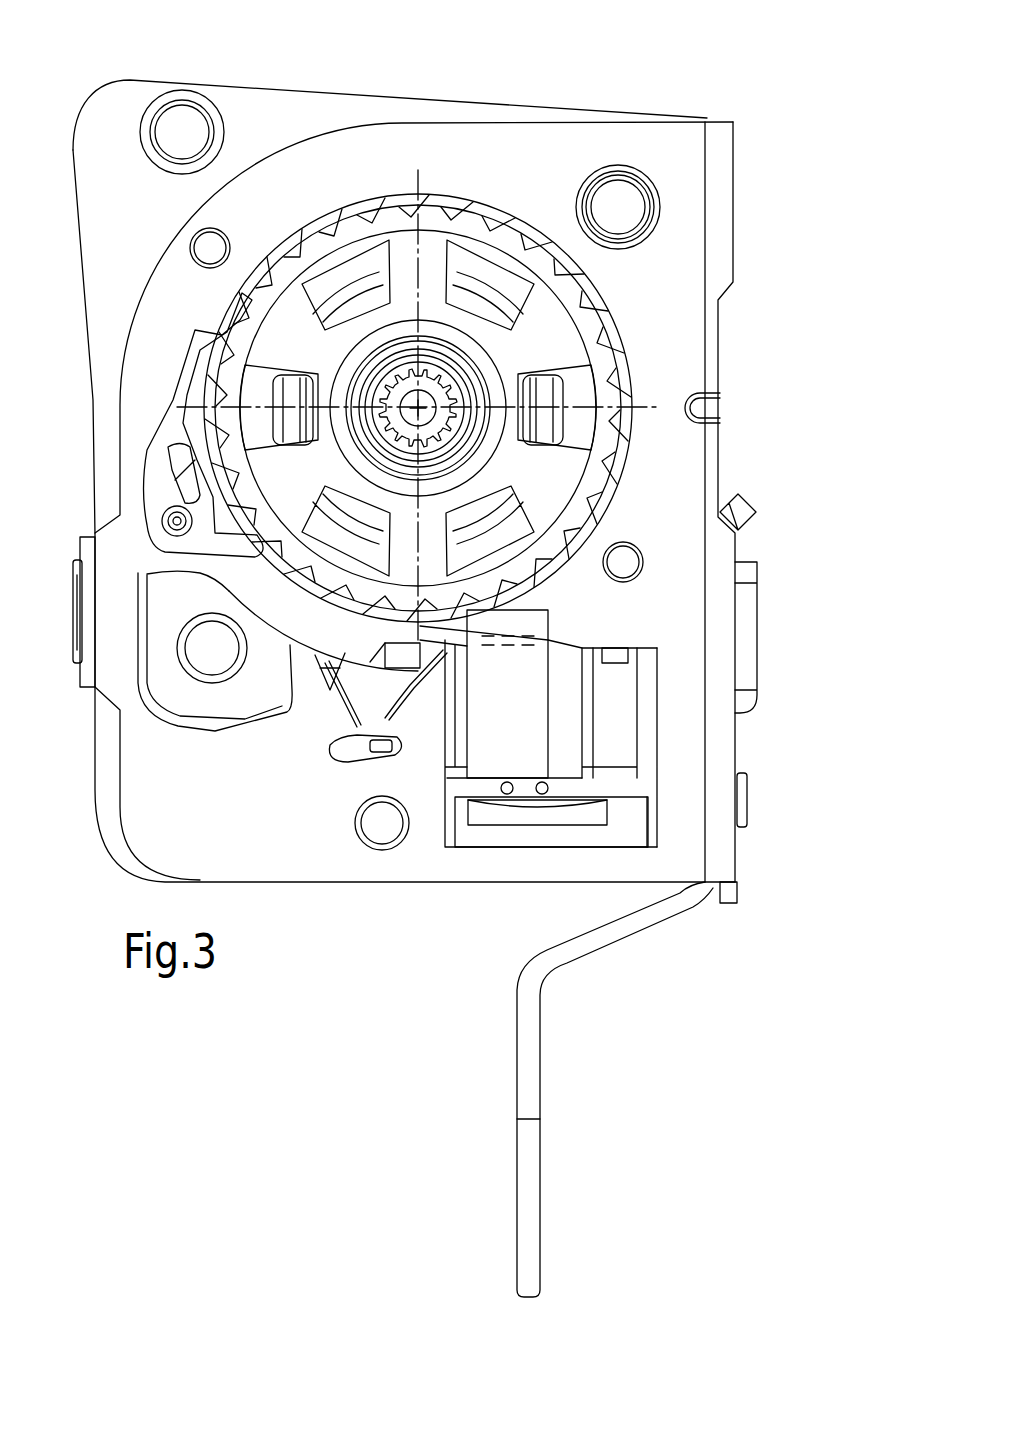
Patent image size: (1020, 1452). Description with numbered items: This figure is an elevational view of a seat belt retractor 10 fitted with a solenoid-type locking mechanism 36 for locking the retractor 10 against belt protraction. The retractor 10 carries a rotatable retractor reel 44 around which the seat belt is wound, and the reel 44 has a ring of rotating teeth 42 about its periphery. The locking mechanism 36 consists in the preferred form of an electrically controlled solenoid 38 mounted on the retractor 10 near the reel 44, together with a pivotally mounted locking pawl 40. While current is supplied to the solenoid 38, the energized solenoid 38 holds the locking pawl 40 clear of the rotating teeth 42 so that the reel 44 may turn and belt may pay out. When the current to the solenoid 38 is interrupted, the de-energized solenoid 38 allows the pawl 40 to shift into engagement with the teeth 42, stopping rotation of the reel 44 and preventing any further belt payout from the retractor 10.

The retractor 10 is at (815, 62).
The retractor reel 44 is at (556, 193).
The rotating teeth 42 is at (592, 480).
The locking mechanism 36 is at (612, 604).
The locking pawl 40 is at (570, 638).
The solenoid 38 is at (507, 720).